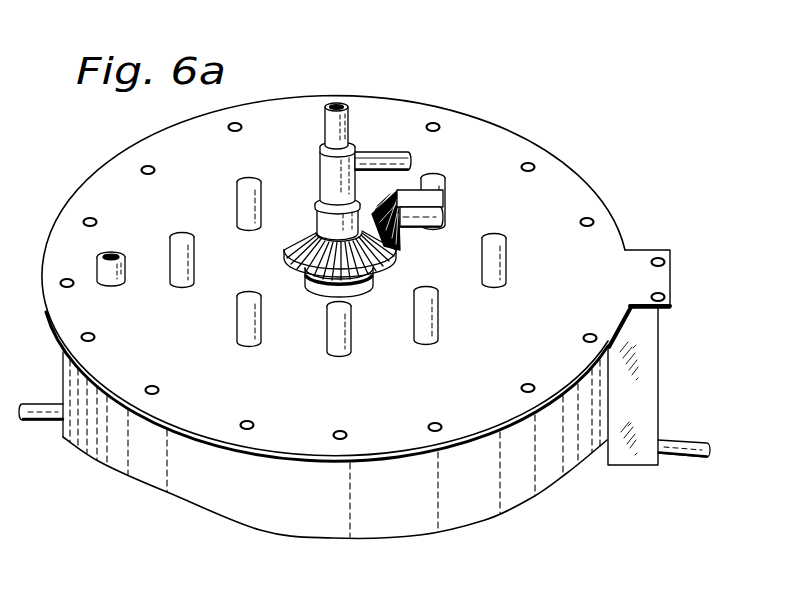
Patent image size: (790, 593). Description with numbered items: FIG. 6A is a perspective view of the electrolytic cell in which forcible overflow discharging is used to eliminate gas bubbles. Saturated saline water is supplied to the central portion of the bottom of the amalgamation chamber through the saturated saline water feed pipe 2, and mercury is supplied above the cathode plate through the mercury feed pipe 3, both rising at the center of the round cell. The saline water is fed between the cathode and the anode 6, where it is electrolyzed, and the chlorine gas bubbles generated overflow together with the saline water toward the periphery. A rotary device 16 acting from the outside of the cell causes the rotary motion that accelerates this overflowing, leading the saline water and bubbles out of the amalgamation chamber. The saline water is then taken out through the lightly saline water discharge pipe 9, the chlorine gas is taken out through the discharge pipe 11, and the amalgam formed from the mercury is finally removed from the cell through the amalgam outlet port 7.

The saturated saline water feed pipe 2 is at (411, 162).
The mercury feed pipe 3 is at (332, 103).
The anode 6 is at (504, 239).
The amalgam outlet port 7 is at (709, 455).
The lightly saline water discharge pipe 9 is at (65, 421).
The discharge pipe 11 is at (112, 251).
The rotary device 16 is at (432, 194).